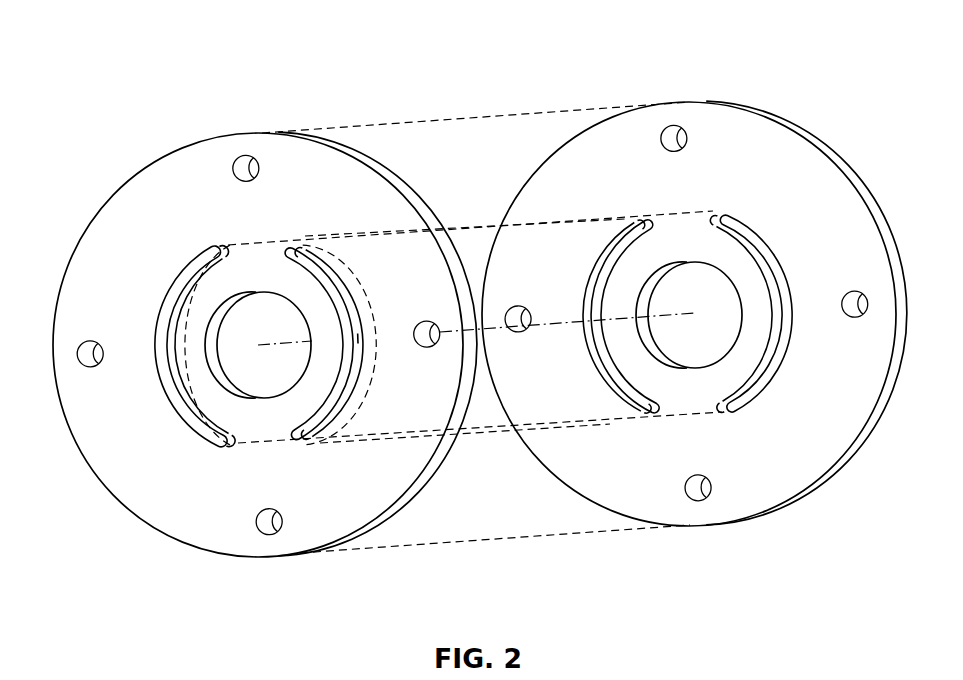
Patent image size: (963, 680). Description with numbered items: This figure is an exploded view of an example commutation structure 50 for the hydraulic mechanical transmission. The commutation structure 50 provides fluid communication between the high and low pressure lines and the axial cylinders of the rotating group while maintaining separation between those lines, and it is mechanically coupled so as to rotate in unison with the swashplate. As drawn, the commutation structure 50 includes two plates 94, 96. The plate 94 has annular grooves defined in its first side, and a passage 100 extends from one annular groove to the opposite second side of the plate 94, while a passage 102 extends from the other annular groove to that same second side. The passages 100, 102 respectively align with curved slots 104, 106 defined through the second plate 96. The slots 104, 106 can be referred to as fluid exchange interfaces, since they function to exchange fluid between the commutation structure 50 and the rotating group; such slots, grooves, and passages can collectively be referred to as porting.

The commutation structure 50 is at (471, 325).
The plate 94 is at (694, 340).
The second plate 96 is at (265, 382).
The passage 100 is at (620, 227).
The passage 102 is at (757, 385).
The curved slot 104 is at (182, 275).
The curved slot 106 is at (333, 430).